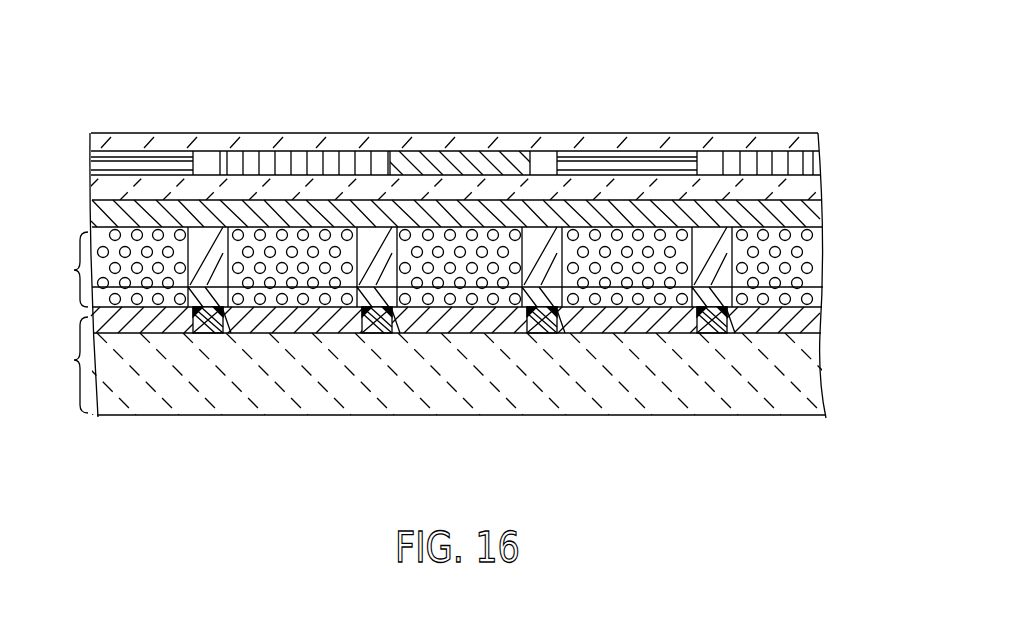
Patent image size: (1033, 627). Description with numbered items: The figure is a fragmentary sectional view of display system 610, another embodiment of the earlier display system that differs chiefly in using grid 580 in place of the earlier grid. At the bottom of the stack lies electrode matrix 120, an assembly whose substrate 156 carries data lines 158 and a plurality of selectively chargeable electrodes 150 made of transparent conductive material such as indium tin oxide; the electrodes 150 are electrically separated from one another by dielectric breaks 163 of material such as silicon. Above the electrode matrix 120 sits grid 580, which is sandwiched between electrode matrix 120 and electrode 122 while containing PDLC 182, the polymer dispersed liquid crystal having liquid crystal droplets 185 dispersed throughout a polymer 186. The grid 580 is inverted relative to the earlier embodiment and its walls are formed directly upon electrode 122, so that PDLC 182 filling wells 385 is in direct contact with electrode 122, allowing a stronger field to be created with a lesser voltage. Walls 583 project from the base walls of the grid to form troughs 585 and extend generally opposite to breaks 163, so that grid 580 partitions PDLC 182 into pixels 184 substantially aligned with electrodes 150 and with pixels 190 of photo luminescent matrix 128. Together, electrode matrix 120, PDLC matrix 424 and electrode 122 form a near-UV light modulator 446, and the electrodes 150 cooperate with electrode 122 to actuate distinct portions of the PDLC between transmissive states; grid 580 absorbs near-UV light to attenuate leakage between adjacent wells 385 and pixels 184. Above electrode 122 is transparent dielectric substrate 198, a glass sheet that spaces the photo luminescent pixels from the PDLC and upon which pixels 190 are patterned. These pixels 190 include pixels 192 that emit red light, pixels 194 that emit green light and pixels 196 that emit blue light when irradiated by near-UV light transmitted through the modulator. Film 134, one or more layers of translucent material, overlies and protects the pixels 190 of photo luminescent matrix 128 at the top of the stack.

The display system 610 is at (757, 97).
The film 134 is at (90, 142).
The photo luminescent matrix 128 is at (88, 163).
The pixels 196 is at (119, 162).
The pixels 190 is at (282, 151).
The pixels 194 is at (342, 153).
The pixels 192 is at (510, 157).
The transparent dielectric substrate 198 is at (88, 190).
The near-UV light modulator 446 is at (817, 196).
The electrode 122 is at (92, 217).
The pixels 184 is at (738, 253).
The liquid crystal droplets 185 is at (840, 242).
The wells 385 is at (777, 270).
The PDLC matrix 424 is at (276, 269).
The PDLC 182 is at (587, 247).
The grid 580 is at (186, 250).
The polymer 186 is at (805, 322).
The walls 583 is at (327, 313).
The troughs 585 is at (460, 298).
The data lines 158 is at (200, 335).
The dielectric breaks 163 is at (237, 333).
The electrodes 150 is at (262, 318).
The substrate 156 is at (690, 408).
The electrode matrix 120 is at (428, 366).